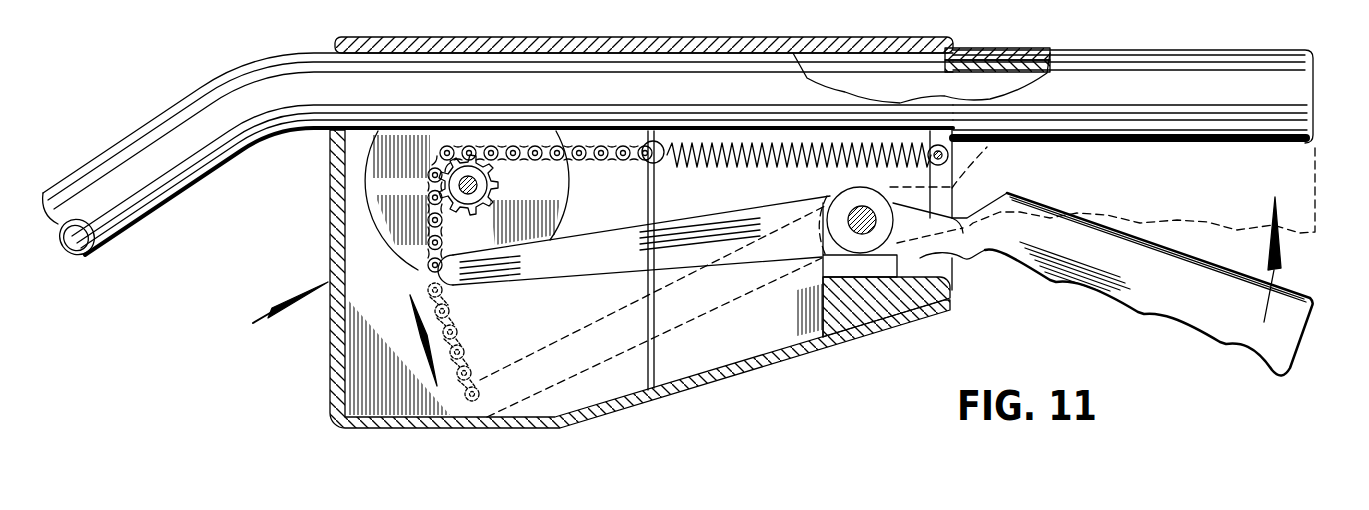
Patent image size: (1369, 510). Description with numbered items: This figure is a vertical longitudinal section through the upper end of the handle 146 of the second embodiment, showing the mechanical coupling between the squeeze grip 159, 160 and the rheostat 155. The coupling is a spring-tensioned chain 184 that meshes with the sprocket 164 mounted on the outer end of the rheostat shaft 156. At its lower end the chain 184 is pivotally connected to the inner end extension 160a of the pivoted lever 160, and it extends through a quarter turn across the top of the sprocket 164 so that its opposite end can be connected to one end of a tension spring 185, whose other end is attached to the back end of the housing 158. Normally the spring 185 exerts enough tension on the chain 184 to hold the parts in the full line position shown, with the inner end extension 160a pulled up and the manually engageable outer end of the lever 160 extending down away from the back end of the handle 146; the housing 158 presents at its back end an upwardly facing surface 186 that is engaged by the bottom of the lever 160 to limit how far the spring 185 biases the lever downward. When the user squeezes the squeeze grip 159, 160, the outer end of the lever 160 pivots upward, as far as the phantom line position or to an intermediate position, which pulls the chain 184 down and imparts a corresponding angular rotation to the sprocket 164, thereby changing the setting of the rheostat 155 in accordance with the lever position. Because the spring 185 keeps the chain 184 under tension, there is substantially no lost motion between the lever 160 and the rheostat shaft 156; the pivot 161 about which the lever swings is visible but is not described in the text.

The handle 146 is at (168, 200).
The rheostat 155 is at (393, 240).
The rheostat shaft 156 is at (456, 185).
The housing 158 is at (583, 278).
The squeeze grip 159 is at (1190, 60).
The lever 160 is at (1100, 284).
The inner end extension 160a is at (575, 265).
The pivot 161 is at (827, 220).
The sprocket 164 is at (499, 192).
The chain 184 is at (588, 162).
The tension spring 185 is at (724, 167).
The upwardly facing surface 186 is at (963, 257).